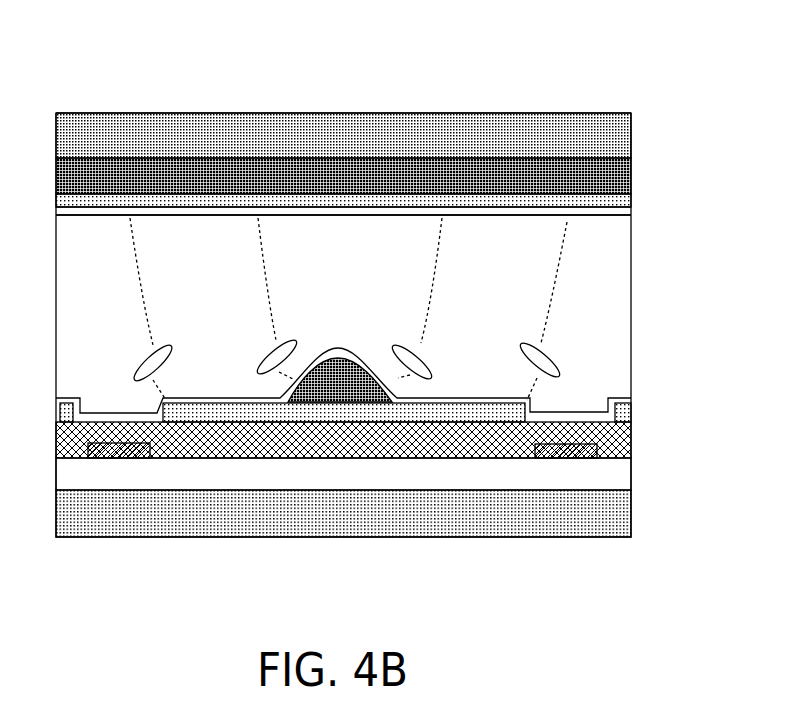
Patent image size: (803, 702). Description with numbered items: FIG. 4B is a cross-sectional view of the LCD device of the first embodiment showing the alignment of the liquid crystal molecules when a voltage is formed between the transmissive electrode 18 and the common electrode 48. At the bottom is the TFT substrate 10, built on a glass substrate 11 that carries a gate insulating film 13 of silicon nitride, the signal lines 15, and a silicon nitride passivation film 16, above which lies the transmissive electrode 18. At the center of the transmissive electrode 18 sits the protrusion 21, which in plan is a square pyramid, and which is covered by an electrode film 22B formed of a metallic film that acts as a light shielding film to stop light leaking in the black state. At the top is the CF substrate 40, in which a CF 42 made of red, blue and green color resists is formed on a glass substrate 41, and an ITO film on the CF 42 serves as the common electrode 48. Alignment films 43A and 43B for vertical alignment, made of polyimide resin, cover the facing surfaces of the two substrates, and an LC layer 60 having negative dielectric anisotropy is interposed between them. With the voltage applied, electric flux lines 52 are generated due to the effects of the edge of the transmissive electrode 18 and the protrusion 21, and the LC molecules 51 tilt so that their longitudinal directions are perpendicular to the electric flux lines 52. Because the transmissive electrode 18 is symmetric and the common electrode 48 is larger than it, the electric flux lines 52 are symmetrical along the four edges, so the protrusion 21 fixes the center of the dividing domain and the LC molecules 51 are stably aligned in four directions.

The TFT substrate 10 is at (644, 355).
The glass substrate 11 is at (513, 525).
The gate insulating film 13 is at (462, 470).
The signal lines 15 is at (115, 450).
The passivation film 16 is at (230, 430).
The transmissive electrode 18 is at (402, 412).
The protrusion 21 is at (330, 396).
The electrode film 22B is at (330, 352).
The CF substrate 40 is at (644, 108).
The glass substrate 41 is at (362, 135).
The CF 42 is at (472, 198).
The common electrode 48 is at (578, 200).
The alignment film 43A is at (370, 358).
The alignment film 43B is at (522, 218).
The LC molecules 51 is at (140, 357).
The electric flux lines 52 is at (142, 287).
The LC layer 60 is at (625, 290).